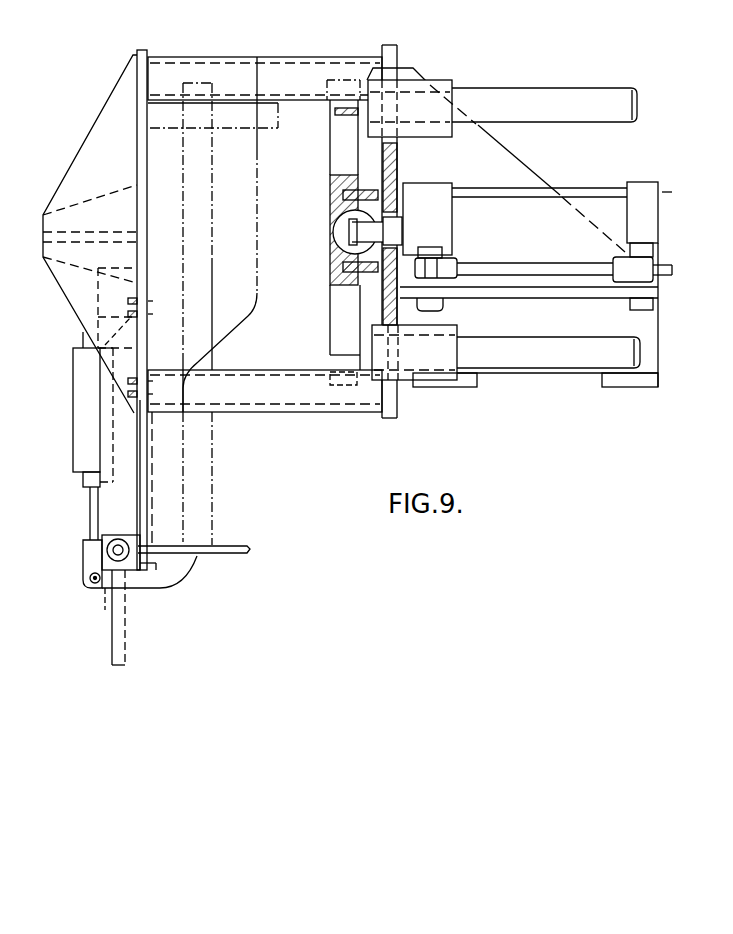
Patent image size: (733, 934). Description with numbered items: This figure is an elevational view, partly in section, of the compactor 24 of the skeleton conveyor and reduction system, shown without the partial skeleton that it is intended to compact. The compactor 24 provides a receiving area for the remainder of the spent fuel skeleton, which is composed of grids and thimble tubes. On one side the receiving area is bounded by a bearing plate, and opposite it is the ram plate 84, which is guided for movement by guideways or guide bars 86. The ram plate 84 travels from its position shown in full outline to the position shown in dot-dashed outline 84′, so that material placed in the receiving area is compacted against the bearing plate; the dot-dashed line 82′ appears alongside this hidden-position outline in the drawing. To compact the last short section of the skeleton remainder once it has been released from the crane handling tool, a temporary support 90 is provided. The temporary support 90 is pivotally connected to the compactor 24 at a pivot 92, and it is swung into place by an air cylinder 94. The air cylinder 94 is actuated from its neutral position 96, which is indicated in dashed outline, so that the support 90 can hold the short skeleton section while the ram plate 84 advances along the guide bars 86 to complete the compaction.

The compactor 24 is at (66, 302).
The guide bars 86 is at (298, 72).
The ram plate 84 is at (352, 388).
The dot-dashed outline of ram plate 84′ is at (207, 220).
The rod 82′ is at (178, 442).
The air cylinder 94 is at (78, 410).
The pivot 92 is at (90, 579).
The temporary support 90 is at (238, 553).
The neutral position 96 is at (103, 620).